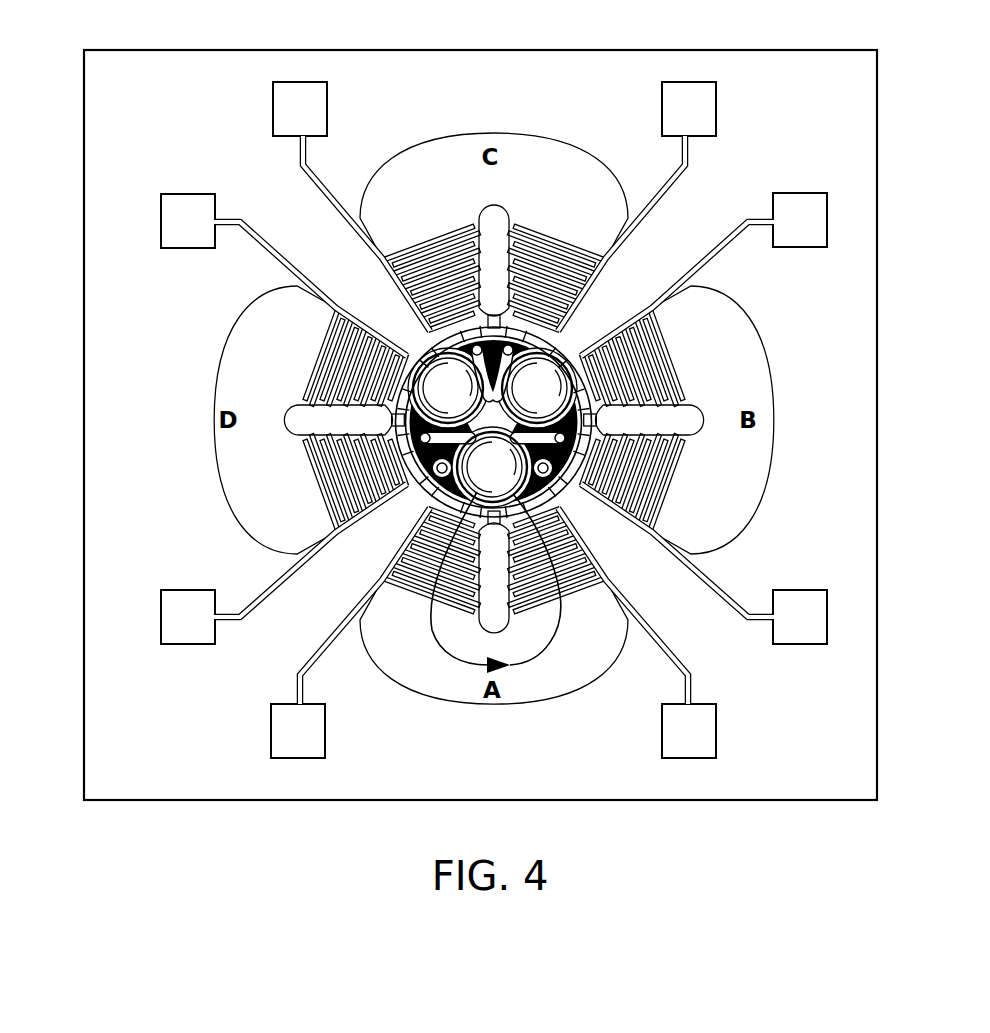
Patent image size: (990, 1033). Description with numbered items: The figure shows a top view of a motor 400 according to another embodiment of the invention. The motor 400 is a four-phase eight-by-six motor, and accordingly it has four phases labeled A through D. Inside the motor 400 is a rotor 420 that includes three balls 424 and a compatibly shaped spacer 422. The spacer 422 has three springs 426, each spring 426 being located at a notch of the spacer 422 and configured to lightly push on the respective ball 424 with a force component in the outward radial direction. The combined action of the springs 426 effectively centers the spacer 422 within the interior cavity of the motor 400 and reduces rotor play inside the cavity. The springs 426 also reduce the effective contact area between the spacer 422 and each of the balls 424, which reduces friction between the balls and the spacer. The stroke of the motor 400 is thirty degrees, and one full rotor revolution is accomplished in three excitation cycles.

The motor 400 is at (926, 91).
The rotor 420 is at (413, 498).
The spacer 422 is at (563, 457).
The ball 424 is at (434, 397).
The spring 426 is at (488, 356).